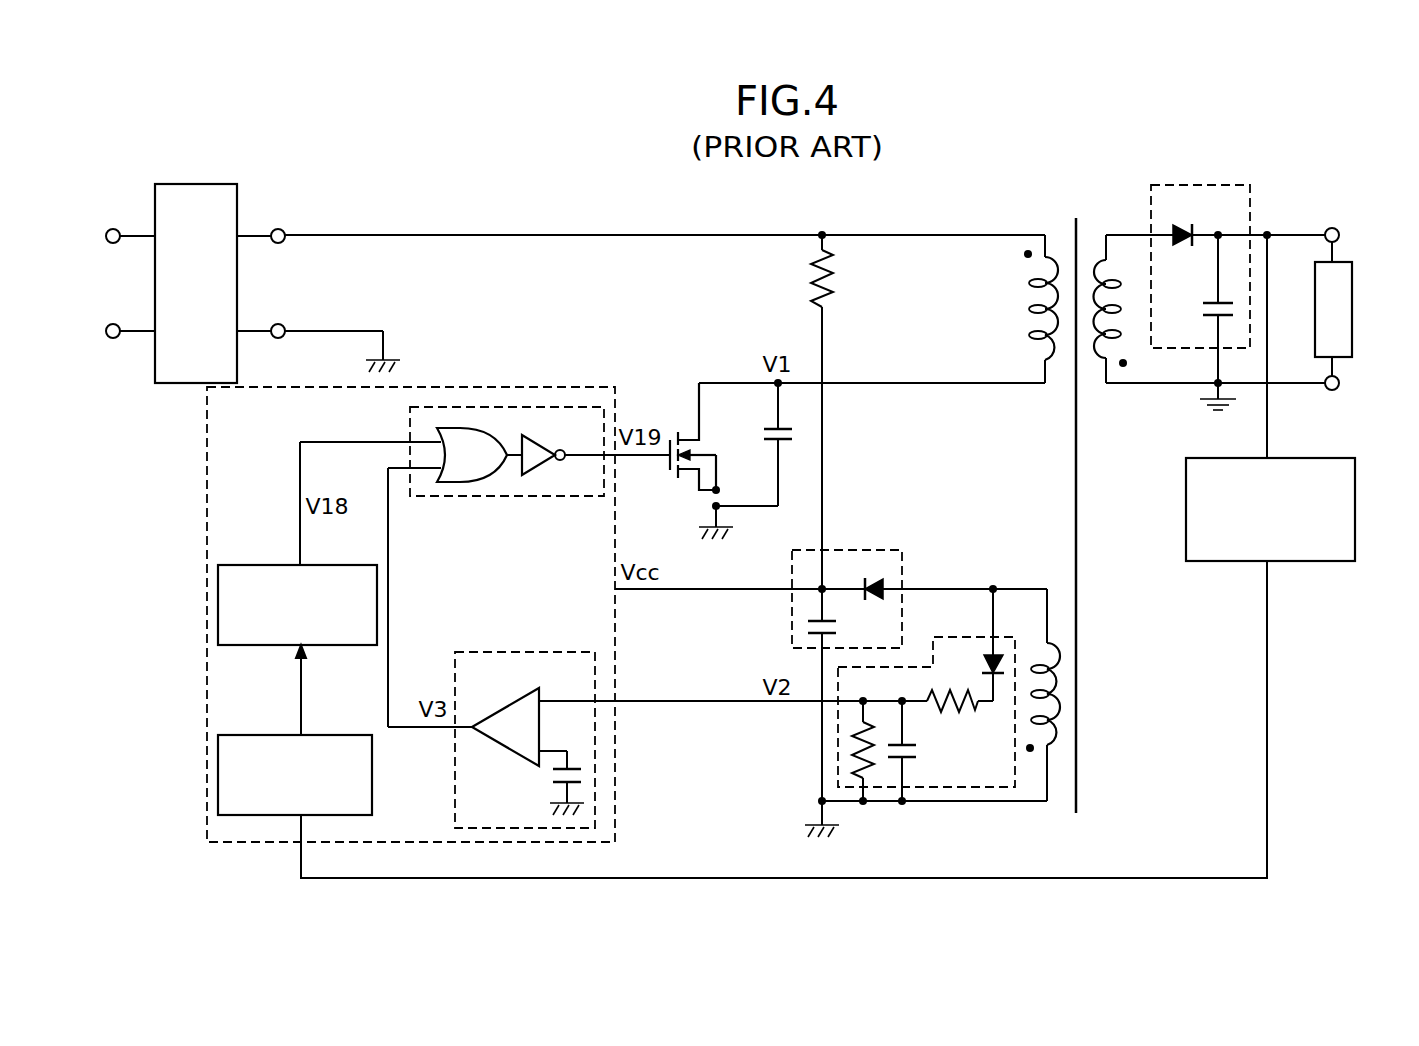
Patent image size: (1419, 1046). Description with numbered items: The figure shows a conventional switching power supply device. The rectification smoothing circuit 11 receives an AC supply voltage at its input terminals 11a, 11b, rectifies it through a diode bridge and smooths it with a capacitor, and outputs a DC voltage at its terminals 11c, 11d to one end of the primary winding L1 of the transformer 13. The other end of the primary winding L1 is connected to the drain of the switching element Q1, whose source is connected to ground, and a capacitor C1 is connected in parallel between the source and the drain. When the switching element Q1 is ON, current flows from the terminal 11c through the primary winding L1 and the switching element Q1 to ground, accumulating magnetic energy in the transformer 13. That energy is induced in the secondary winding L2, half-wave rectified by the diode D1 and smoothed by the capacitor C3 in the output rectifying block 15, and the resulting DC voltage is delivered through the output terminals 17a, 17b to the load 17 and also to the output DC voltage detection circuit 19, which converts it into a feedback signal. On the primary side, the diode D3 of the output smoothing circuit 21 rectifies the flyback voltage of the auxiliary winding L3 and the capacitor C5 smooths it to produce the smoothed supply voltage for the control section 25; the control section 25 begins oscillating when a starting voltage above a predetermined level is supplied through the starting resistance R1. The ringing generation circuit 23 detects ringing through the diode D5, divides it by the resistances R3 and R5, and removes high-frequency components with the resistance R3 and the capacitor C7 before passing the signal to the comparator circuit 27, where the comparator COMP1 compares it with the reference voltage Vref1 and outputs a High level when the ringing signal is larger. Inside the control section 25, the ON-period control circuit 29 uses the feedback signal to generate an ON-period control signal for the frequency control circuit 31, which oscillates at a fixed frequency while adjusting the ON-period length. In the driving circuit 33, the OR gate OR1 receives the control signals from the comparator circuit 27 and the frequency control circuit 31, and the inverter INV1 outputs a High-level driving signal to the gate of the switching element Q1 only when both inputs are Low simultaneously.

The rectification smoothing circuit 11 is at (189, 184).
The input terminal 11a is at (113, 228).
The input terminal 11b is at (113, 323).
The terminal of the rectification smoothing circuit 11c is at (284, 231).
The output terminal of rectification smoothing circuit 11d is at (284, 326).
The transformer 13 is at (1077, 220).
The output rectification smoothing circuit 15 is at (1203, 185).
The load 17 is at (1352, 313).
The output terminal 17a is at (1333, 227).
The output terminal 17b is at (1336, 390).
The output DC voltage detection circuit 19 is at (1219, 562).
The output smoothing circuit 21 is at (873, 550).
The ringing generation circuit 23 is at (985, 788).
The control section 25 is at (478, 387).
The comparator circuit 27 is at (455, 778).
The ON-period control circuit 29 is at (256, 734).
The frequency control circuit 31 is at (255, 564).
The driving circuit 33 is at (497, 497).
The switching element Q1 is at (679, 433).
The capacitor C1 is at (764, 431).
The starting resistance R1 is at (834, 286).
The primary winding L1 is at (1033, 307).
The secondary winding L2 is at (1121, 304).
The auxiliary winding L3 is at (1063, 683).
The diode D1 is at (1183, 244).
The capacitor C3 is at (1203, 309).
The diode D3 is at (873, 582).
The capacitor C5 is at (840, 630).
The diode D5 is at (984, 669).
The resistance R3 is at (958, 712).
The resistance R5 is at (868, 722).
The capacitor C7 is at (916, 753).
The OR gate OR1 is at (472, 455).
The inverter INV1 is at (539, 437).
The comparator COMP1 is at (497, 708).
The reference voltage Vref1 is at (552, 781).